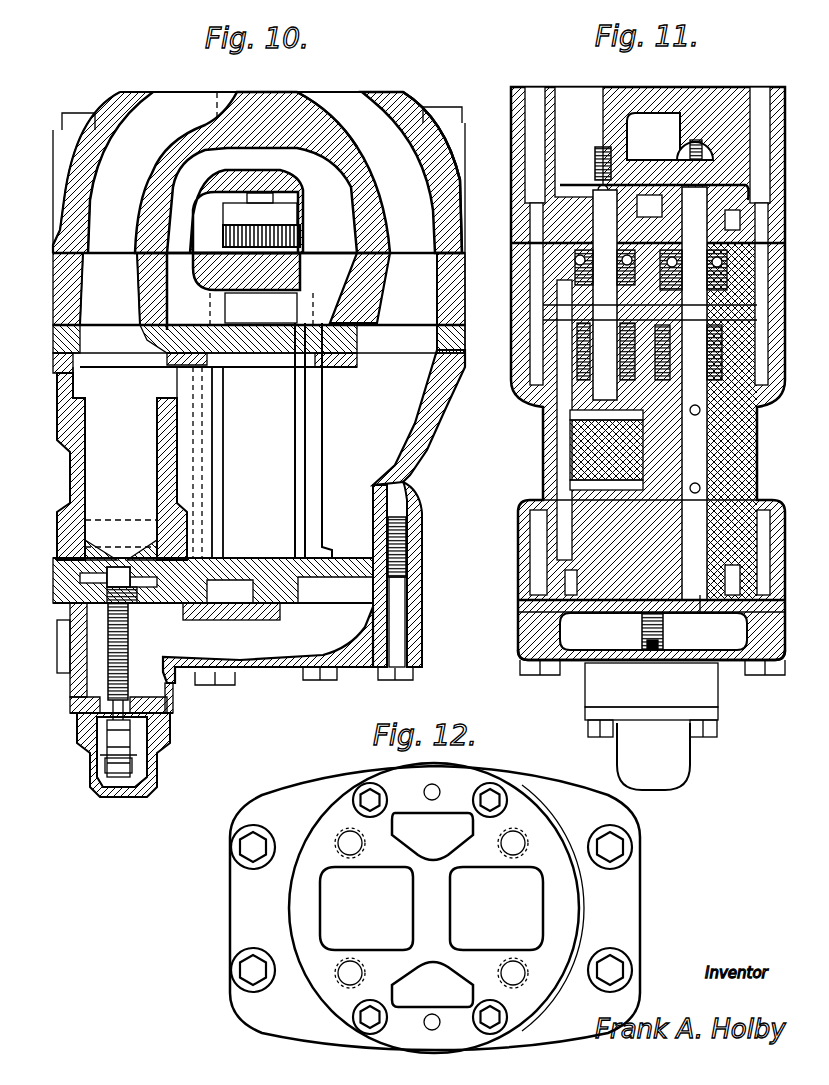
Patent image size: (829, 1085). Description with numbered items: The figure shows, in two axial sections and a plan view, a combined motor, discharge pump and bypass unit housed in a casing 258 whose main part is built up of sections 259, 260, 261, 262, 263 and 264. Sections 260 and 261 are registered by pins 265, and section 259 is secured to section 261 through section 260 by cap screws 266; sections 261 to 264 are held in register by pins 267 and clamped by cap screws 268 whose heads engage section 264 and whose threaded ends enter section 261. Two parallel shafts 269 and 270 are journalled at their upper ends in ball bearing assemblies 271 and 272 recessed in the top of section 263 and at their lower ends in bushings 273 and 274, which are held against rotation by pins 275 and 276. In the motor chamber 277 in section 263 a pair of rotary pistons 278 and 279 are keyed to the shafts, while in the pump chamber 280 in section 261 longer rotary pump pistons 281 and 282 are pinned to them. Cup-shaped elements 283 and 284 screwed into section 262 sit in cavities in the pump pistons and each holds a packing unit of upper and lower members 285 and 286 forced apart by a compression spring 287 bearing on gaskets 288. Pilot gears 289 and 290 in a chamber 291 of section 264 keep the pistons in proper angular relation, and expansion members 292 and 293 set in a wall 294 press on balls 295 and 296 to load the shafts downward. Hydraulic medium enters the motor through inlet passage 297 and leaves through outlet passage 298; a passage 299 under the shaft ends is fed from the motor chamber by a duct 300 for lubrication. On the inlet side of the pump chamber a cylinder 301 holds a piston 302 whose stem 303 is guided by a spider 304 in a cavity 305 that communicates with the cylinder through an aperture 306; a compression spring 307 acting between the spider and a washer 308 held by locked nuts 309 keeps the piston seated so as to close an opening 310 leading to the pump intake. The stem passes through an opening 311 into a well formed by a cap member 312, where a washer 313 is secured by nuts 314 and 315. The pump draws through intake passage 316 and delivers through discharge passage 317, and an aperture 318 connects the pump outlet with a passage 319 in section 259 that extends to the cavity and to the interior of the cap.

In FIG. 10, the casing 258 is at (413, 444).
In FIG. 10, the casing section 259 is at (422, 607).
In FIG. 10, the casing section 260 is at (422, 577).
In FIG. 10, the casing section 261 is at (412, 485).
In FIG. 11, the casing section 261 is at (520, 542).
In FIG. 10, the casing section 262 is at (259, 339).
In FIG. 11, the casing section 262 is at (550, 307).
In FIG. 10, the casing section 263 is at (465, 268).
In FIG. 10, the casing section 264 is at (437, 157).
In FIG. 12, the casing section 264 is at (303, 1007).
In FIG. 11, the pins 265 is at (538, 522).
In FIG. 10, the cap screws 266 is at (397, 643).
In FIG. 11, the cap screws 266 is at (540, 677).
In FIG. 11, the pins 267 is at (575, 262).
In FIG. 10, the cap screws 268 is at (440, 108).
In FIG. 11, the shaft 269 is at (600, 437).
In FIG. 11, the shaft 270 is at (697, 460).
In FIG. 11, the ball bearing assembly 271 is at (548, 265).
In FIG. 11, the ball bearing assembly 272 is at (694, 393).
In FIG. 11, the bushing 273 is at (568, 558).
In FIG. 11, the bushing 274 is at (750, 483).
In FIG. 11, the pin 275 is at (547, 613).
In FIG. 11, the pin 276 is at (702, 598).
In FIG. 10, the motor chamber 277 is at (330, 297).
In FIG. 11, the motor chamber 277 is at (548, 297).
In FIG. 10, the rotary piston 278 is at (205, 363).
In FIG. 11, the rotary piston 278 is at (548, 322).
In FIG. 11, the rotary piston 279 is at (640, 351).
In FIG. 10, the pump chamber 280 is at (335, 440).
In FIG. 11, the pump chamber 280 is at (570, 462).
In FIG. 11, the rotary pump piston 281 is at (570, 473).
In FIG. 11, the rotary pump piston 282 is at (733, 432).
In FIG. 11, the cup-shaped element 283 is at (580, 268).
In FIG. 11, the cup-shaped element 284 is at (745, 415).
In FIG. 11, the upper packing member 285 is at (648, 295).
In FIG. 11, the lower packing member 286 is at (777, 405).
In FIG. 11, the compression spring 287 is at (679, 352).
In FIG. 11, the gaskets 288 is at (702, 352).
In FIG. 11, the pilot gear 289 is at (540, 227).
In FIG. 11, the pilot gear 290 is at (660, 215).
In FIG. 11, the chamber 291 is at (723, 187).
In FIG. 11, the expansion member 292 is at (580, 177).
In FIG. 11, the expansion member 293 is at (713, 152).
In FIG. 11, the wall 294 is at (647, 165).
In FIG. 11, the ball 295 is at (610, 188).
In FIG. 11, the ball 296 is at (700, 128).
In FIG. 10, the inlet passage 297 is at (185, 177).
In FIG. 12, the inlet passage 297 is at (440, 827).
In FIG. 10, the outlet passage 298 is at (310, 158).
In FIG. 12, the outlet passage 298 is at (417, 990).
In FIG. 10, the passage 299 is at (220, 597).
In FIG. 11, the passage 299 is at (517, 608).
In FIG. 10, the duct 300 is at (195, 381).
In FIG. 10, the cylinder 301 is at (173, 440).
In FIG. 10, the piston 302 is at (90, 472).
In FIG. 10, the stem 303 is at (130, 620).
In FIG. 11, the stem 303 is at (643, 643).
In FIG. 10, the spider 304 is at (107, 595).
In FIG. 10, the cavity 305 is at (87, 580).
In FIG. 10, the aperture 306 is at (73, 558).
In FIG. 10, the compression spring 307 is at (128, 641).
In FIG. 11, the compression spring 307 is at (642, 626).
In FIG. 10, the washer 308 is at (137, 697).
In FIG. 10, the locked nuts 309 is at (130, 730).
In FIG. 10, the opening 310 is at (187, 517).
In FIG. 10, the opening 311 is at (97, 710).
In FIG. 10, the cap member 312 is at (153, 745).
In FIG. 11, the cap member 312 is at (670, 756).
In FIG. 10, the washer 313 is at (103, 780).
In FIG. 10, the nut 314 is at (127, 755).
In FIG. 10, the nut 315 is at (110, 770).
In FIG. 10, the intake passage 316 is at (128, 143).
In FIG. 12, the intake passage 316 is at (342, 903).
In FIG. 10, the discharge passage 317 is at (375, 112).
In FIG. 12, the discharge passage 317 is at (520, 902).
In FIG. 10, the aperture 318 is at (347, 565).
In FIG. 10, the passage 319 is at (277, 643).
In FIG. 11, the passage 319 is at (693, 642).